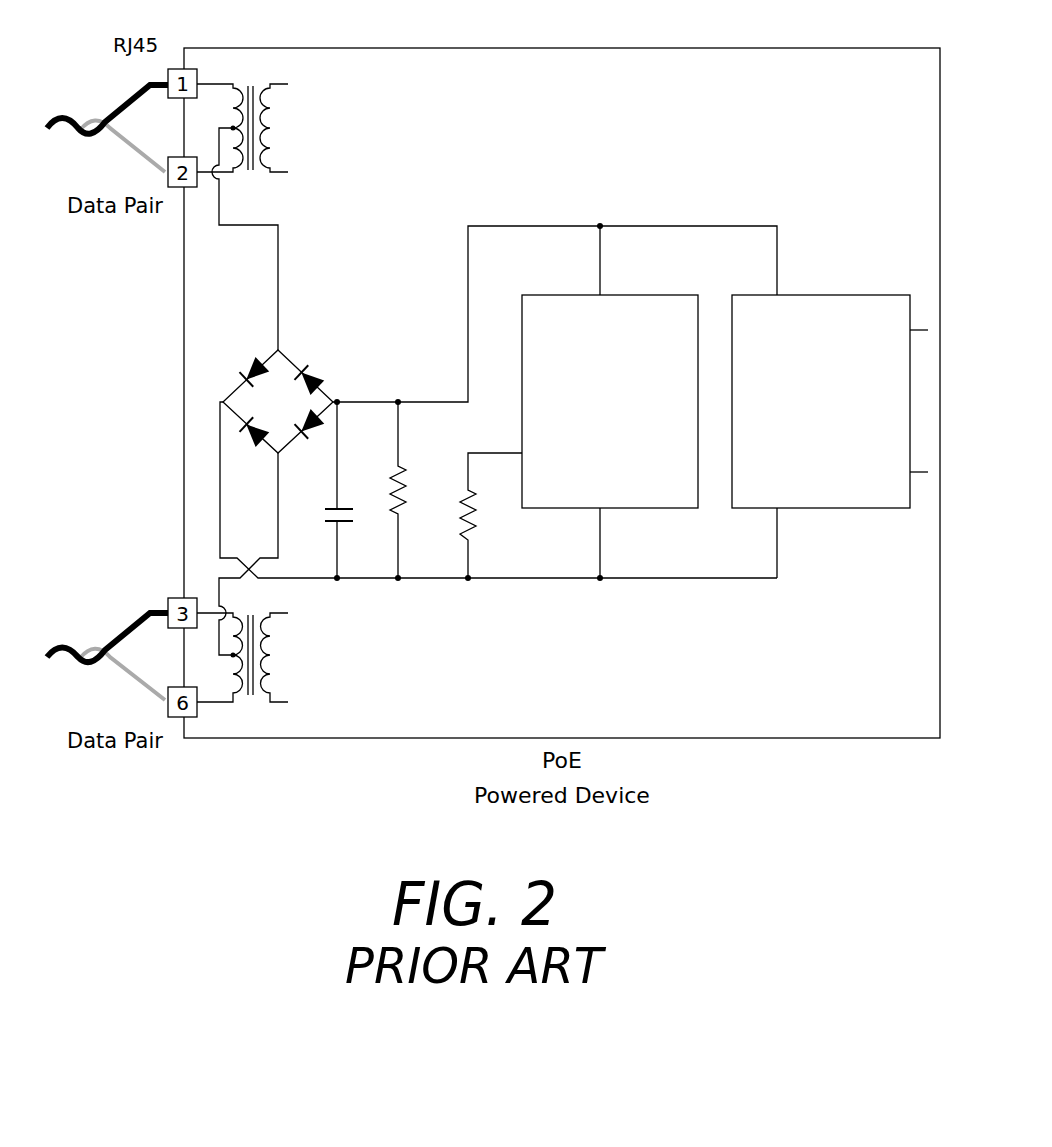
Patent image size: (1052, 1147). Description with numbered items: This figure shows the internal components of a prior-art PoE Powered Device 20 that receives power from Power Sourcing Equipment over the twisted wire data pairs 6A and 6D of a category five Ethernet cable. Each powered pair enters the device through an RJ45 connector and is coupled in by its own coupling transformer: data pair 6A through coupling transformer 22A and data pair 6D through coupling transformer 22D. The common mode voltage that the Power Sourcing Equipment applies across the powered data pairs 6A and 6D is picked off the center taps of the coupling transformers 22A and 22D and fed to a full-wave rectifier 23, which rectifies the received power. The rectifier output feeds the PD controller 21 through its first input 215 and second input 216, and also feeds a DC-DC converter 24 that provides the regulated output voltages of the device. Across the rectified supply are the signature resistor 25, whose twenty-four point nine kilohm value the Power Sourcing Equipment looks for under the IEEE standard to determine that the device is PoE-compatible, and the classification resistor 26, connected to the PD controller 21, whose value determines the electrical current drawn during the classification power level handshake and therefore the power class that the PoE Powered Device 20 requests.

The PoE Powered Device 20 is at (309, 47).
The data pair 6A is at (133, 97).
The data pair 6D is at (133, 625).
The coupling transformer 22A is at (272, 217).
The coupling transformer 22D is at (272, 577).
The full-wave rectifier 23 is at (272, 350).
The signature resistor 25 is at (390, 477).
The classification resistor 26 is at (462, 500).
The PD controller 21 is at (626, 457).
The DC-DC converter 24 is at (776, 457).
The first input 215 is at (598, 292).
The second input 216 is at (606, 512).